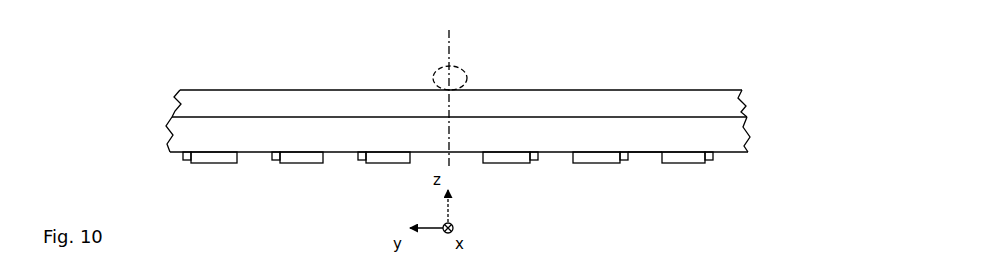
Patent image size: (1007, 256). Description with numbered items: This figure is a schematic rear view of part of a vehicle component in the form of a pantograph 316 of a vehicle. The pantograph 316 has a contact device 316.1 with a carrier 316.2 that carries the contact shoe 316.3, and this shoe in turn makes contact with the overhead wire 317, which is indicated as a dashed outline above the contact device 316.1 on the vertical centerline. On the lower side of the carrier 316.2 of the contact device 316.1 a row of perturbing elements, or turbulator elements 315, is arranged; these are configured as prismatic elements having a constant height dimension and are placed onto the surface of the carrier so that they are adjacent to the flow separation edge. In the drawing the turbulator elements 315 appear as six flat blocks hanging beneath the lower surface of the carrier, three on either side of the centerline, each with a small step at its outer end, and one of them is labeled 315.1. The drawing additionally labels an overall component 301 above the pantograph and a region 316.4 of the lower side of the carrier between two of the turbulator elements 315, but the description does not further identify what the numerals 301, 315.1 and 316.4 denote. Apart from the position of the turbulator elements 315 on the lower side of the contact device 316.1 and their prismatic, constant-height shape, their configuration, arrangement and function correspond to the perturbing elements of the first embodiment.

The sensor assembly 301 is at (445, 130).
The perturbing element 315 is at (375, 150).
The contact pad 315.1 is at (384, 164).
The pantograph 316 is at (445, 137).
The contact device 316.1 is at (148, 118).
The carrier 316.2 is at (749, 154).
The contact shoe 316.3 is at (751, 102).
The bottom surface region 316.4 is at (638, 157).
The overhead wire 317 is at (434, 67).